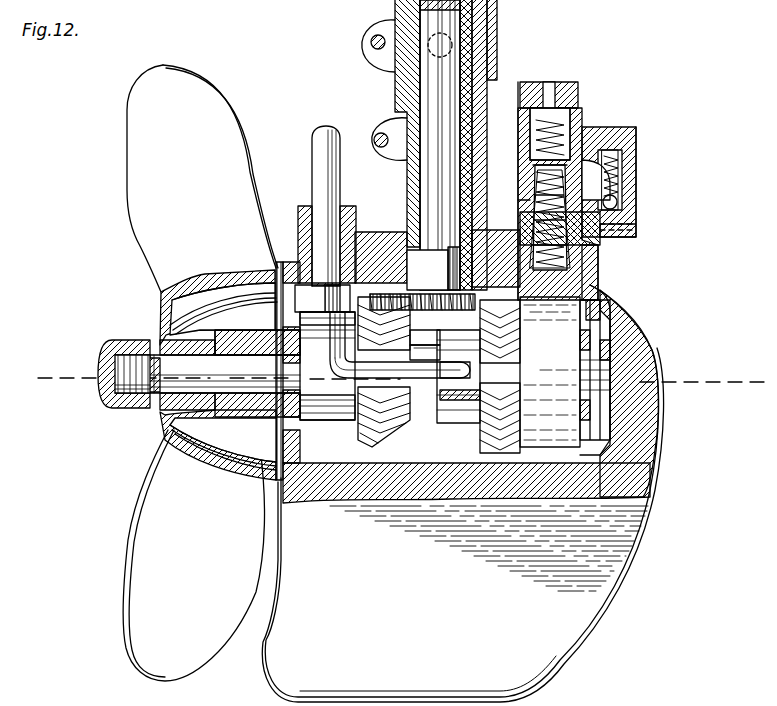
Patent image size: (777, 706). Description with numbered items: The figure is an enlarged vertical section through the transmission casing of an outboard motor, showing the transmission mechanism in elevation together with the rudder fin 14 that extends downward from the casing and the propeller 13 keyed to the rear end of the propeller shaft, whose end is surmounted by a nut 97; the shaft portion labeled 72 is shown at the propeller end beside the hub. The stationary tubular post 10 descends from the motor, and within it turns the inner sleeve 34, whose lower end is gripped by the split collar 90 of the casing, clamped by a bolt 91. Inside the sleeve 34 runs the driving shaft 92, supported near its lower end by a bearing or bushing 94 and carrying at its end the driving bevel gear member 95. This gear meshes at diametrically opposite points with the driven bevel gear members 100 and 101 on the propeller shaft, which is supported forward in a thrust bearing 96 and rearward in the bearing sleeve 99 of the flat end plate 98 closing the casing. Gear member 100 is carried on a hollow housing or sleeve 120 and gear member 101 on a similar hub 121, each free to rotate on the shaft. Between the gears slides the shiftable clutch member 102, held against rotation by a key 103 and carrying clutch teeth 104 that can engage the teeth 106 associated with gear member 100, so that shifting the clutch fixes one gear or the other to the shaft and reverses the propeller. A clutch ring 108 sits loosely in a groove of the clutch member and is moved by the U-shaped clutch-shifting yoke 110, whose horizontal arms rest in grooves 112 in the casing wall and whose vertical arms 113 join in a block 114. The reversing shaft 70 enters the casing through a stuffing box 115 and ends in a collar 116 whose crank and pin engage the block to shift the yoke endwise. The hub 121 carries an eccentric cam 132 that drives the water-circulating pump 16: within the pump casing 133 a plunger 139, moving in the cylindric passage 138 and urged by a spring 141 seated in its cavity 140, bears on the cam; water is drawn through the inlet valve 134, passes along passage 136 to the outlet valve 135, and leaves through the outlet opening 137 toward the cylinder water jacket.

The tubular casing or post 10 is at (398, 94).
The propeller 13 is at (65, 338).
The fin 14 is at (458, 585).
The water-circulating pump 16 is at (642, 197).
The inner sleeve 34 is at (395, 60).
The reversing shaft 70 is at (314, 148).
The propeller shaft 72 is at (207, 371).
The split collar 90 is at (520, 150).
The bolt 91 is at (372, 138).
The driving shaft 92 is at (436, 13).
The bearing or bushing 94 is at (420, 178).
The bevel gear member 95 is at (430, 300).
The thrust bearing 96 is at (600, 322).
The nut 97 is at (104, 352).
The end plate 98 is at (278, 428).
The bearing sleeve 99 is at (232, 345).
The bevel gear member 100 is at (378, 436).
The bevel gear member 101 is at (496, 436).
The shiftable clutch member 102 is at (466, 440).
The key 103 is at (462, 397).
The clutch teeth 104 is at (419, 327).
The clutch teeth 106 is at (419, 345).
The clutch ring 108 is at (460, 420).
The clutch-shifting yoke 110 is at (318, 368).
The grooves 112 is at (330, 384).
The vertically extending arms 113 is at (262, 318).
The block 114 is at (278, 288).
The stuffing box 115 is at (304, 210).
The collar 116 is at (296, 290).
The housing or sleeve 120 is at (334, 412).
The housing or hub 121 is at (562, 410).
The cam 132 is at (550, 372).
The pump casing 133 is at (590, 116).
The inlet valve 134 is at (618, 166).
The outlet valve 135 is at (548, 100).
The passage 136 is at (586, 142).
The outlet opening 137 is at (535, 122).
The cylindric passage 138 is at (582, 262).
The plunger 139 is at (585, 283).
The cavity 140 is at (535, 214).
The spring 141 is at (530, 184).